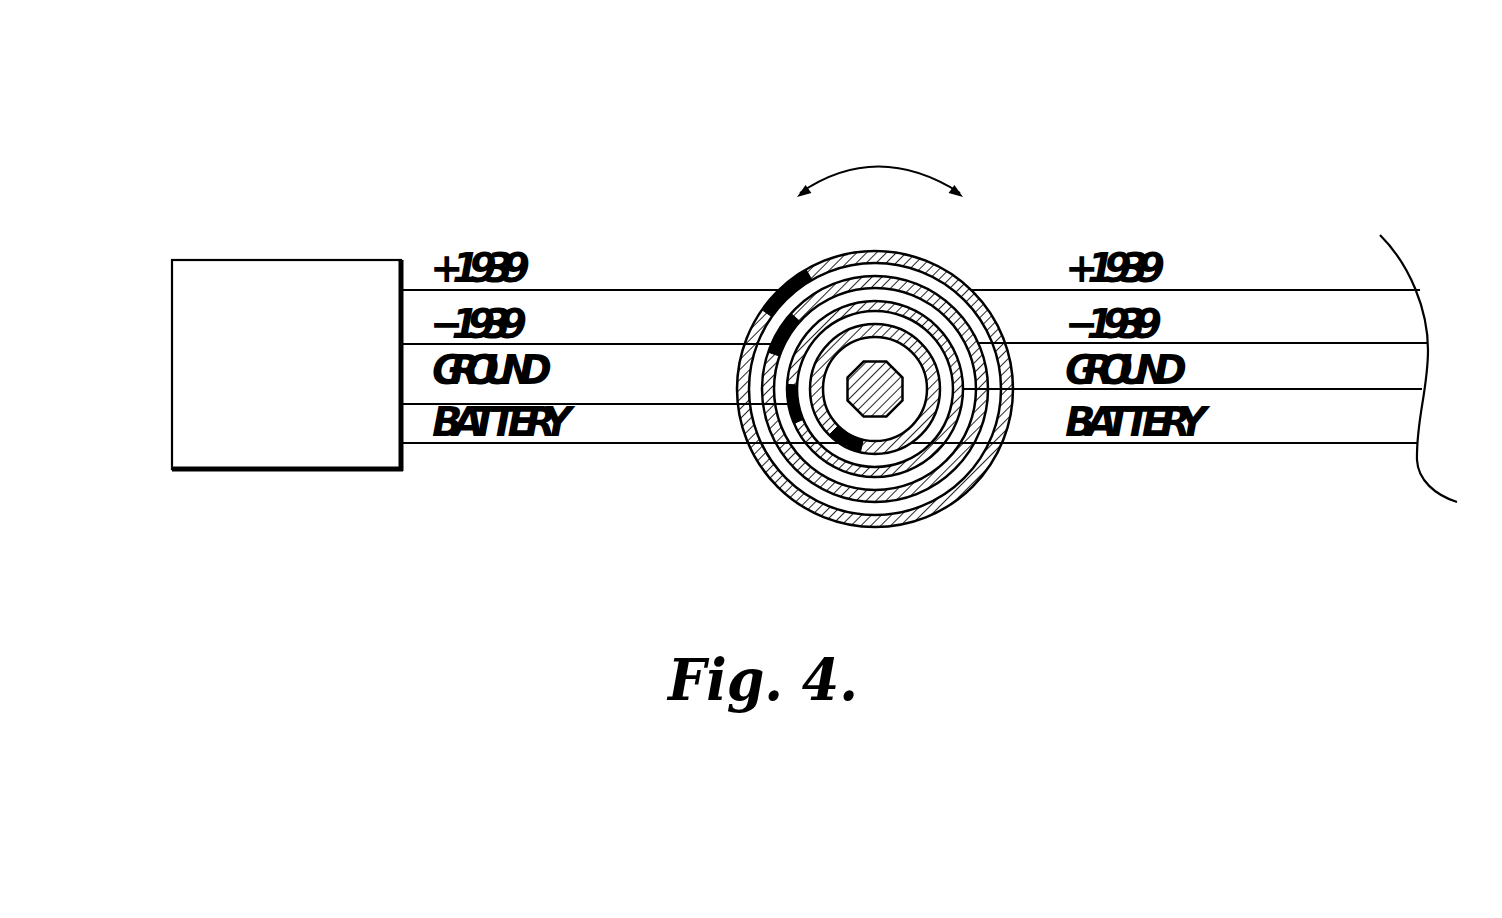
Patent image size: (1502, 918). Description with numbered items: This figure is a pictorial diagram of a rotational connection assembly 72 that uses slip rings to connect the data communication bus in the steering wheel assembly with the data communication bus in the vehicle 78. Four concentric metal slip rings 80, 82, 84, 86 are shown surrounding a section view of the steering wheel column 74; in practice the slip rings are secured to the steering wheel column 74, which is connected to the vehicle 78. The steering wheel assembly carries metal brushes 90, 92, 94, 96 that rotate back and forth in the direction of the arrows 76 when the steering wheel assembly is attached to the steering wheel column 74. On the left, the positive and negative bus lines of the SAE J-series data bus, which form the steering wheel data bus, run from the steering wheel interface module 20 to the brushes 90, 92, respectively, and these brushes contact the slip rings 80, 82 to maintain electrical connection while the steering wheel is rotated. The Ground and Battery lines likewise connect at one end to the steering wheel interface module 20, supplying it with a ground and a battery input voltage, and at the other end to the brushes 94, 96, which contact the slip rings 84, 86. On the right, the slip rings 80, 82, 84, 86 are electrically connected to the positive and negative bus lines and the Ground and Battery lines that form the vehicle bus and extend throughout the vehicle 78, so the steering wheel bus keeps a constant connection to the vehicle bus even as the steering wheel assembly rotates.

The steering wheel interface module 20 is at (283, 258).
The rotational connection assembly 72 is at (891, 379).
The steering wheel column 74 is at (872, 377).
The arrows 76 is at (895, 165).
The vehicle 78 is at (1465, 381).
The slip ring 80 is at (995, 462).
The slip ring 82 is at (962, 460).
The slip ring 84 is at (908, 466).
The slip ring 86 is at (878, 448).
The metal brush 90 is at (787, 287).
The metal brush 92 is at (770, 330).
The metal brush 94 is at (762, 442).
The metal brush 96 is at (838, 442).